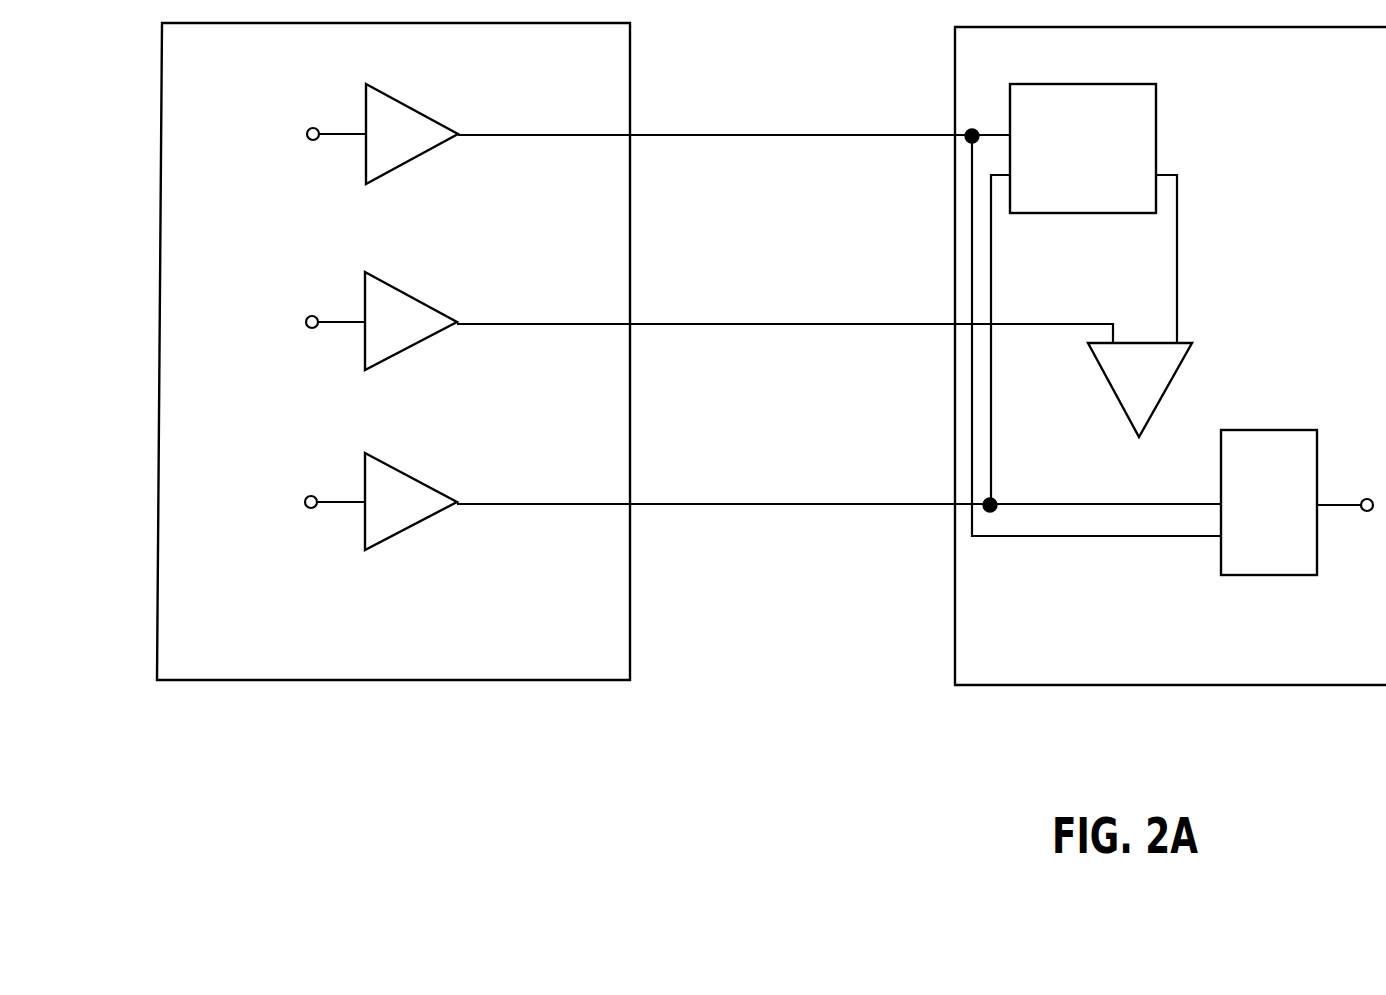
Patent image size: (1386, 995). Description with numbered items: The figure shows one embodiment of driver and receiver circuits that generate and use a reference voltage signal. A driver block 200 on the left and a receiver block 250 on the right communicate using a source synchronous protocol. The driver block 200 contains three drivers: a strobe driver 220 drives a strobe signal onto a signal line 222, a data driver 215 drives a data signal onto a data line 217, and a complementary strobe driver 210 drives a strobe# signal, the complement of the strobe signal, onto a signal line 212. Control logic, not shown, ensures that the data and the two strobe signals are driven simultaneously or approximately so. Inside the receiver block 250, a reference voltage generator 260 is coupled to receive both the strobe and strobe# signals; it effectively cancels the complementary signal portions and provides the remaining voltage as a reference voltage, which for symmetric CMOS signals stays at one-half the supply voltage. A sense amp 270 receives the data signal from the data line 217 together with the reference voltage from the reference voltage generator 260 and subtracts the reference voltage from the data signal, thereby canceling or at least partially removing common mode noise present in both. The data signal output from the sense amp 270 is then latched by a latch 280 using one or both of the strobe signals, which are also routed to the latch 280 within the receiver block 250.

The driver block 200 is at (585, 661).
The receiver block 250 is at (1385, 666).
The strobe driver 220 is at (408, 150).
The data driver 215 is at (406, 338).
The complementary strobe driver 210 is at (406, 518).
The signal line 222 is at (742, 136).
The data line 217 is at (740, 325).
The signal line 212 is at (740, 505).
The reference voltage generator 260 is at (1135, 202).
The sense amp 270 is at (1153, 386).
The latch 280 is at (1288, 561).